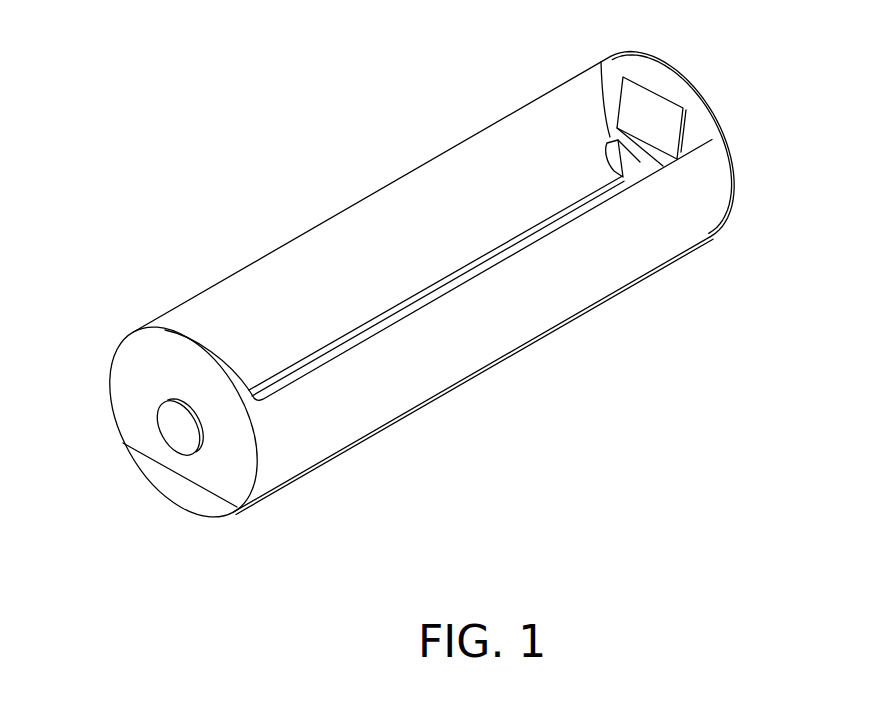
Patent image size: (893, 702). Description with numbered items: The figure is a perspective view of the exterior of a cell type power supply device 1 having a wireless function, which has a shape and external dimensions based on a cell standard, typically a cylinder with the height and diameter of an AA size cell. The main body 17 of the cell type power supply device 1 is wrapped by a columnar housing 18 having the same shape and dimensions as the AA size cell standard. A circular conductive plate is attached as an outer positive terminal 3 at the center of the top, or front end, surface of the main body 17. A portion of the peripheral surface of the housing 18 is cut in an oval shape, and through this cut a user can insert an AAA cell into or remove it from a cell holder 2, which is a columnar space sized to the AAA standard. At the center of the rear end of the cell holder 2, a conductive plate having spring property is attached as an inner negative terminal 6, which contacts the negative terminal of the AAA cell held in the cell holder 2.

The cell type power supply device 1 is at (395, 286).
The cell holder 2 is at (359, 243).
The outer positive terminal 3 is at (157, 420).
The inner negative terminal 6 is at (672, 99).
The main body 17 is at (467, 139).
The housing 18 is at (424, 385).